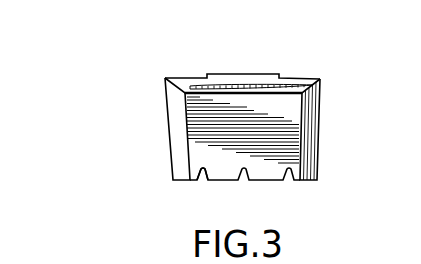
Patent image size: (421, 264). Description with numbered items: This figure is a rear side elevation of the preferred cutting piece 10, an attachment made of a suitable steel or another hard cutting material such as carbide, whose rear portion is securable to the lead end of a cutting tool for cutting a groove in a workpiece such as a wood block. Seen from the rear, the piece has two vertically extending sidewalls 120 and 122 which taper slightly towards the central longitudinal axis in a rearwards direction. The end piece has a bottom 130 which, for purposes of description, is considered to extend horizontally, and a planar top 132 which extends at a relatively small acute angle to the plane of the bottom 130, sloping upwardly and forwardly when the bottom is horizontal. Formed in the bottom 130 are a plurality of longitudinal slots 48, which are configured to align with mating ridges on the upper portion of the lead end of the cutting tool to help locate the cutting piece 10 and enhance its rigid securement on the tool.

The cutting piece 10 is at (239, 115).
The longitudinal slots 48 is at (201, 181).
The sidewall 120 is at (172, 136).
The sidewall 122 is at (318, 116).
The bottom 130 is at (258, 181).
The top 132 is at (310, 76).